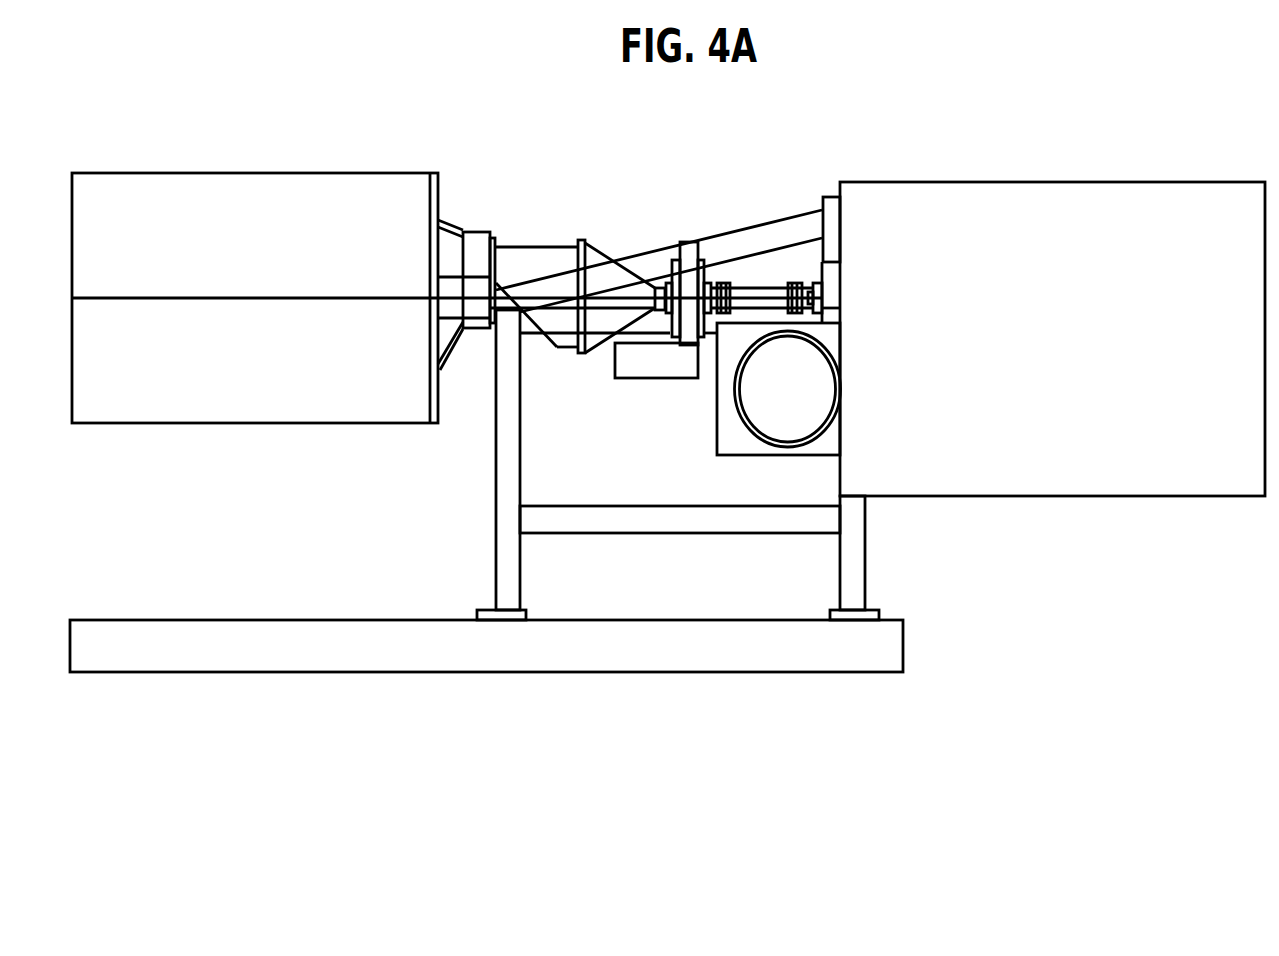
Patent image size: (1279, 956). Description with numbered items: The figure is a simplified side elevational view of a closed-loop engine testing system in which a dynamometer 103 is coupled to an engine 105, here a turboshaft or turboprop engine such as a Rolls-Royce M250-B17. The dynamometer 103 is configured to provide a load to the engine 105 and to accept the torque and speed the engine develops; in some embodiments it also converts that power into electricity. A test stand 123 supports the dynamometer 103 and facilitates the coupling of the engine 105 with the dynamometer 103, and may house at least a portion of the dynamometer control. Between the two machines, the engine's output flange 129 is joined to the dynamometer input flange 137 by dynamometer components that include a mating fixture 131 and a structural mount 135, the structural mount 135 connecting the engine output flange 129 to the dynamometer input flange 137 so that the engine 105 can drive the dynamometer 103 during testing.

The dynamometer 103 is at (338, 187).
The engine 105 is at (1023, 496).
The test stand 123 is at (497, 495).
The engine output flange 129 is at (822, 283).
The mating fixture 131 is at (838, 158).
The structural mount 135 is at (820, 285).
The dynamometer input flange 137 is at (820, 283).